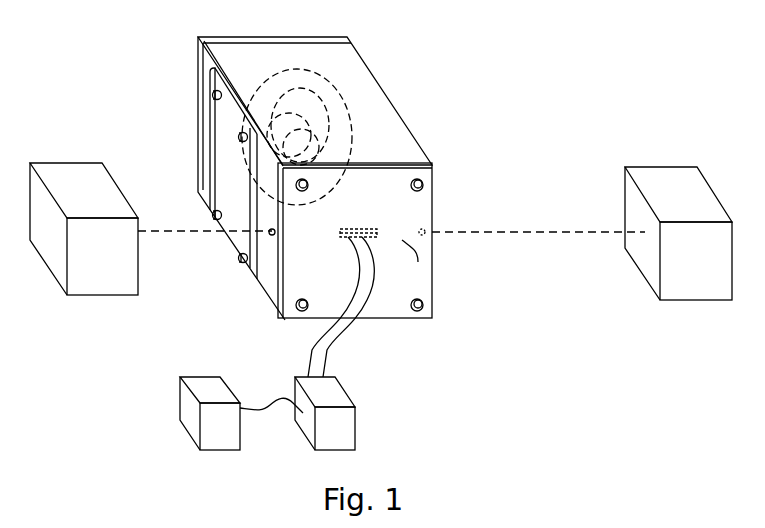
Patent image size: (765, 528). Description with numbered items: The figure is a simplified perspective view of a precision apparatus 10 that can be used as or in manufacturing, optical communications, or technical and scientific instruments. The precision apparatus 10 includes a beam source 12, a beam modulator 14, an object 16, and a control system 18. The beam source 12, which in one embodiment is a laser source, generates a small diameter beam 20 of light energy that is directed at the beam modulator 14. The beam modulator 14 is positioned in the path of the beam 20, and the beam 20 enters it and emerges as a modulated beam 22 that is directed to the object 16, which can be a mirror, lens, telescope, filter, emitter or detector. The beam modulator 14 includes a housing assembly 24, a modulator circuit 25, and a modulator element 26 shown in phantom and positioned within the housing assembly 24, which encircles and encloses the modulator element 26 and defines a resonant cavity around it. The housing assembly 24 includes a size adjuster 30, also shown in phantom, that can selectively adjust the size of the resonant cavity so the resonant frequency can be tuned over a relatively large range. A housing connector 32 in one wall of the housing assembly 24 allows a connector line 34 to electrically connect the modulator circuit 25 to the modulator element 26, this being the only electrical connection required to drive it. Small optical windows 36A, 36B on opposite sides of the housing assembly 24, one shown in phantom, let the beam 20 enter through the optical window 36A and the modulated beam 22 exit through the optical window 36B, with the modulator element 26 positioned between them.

The precision apparatus 10 is at (497, 172).
The beam source 12 is at (84, 229).
The beam modulator 14 is at (397, 136).
The object 16 is at (678, 233).
The control system 18 is at (241, 413).
The beam 20 is at (158, 231).
The modulated beam 22 is at (582, 232).
The housing assembly 24 is at (432, 310).
The modulator circuit 25 is at (325, 413).
The modulator element 26 is at (418, 262).
The size adjuster 30 is at (313, 78).
The housing connector 32 is at (356, 228).
The connector line 34 is at (325, 342).
The optical window 36A is at (271, 236).
The optical window 36B is at (424, 234).